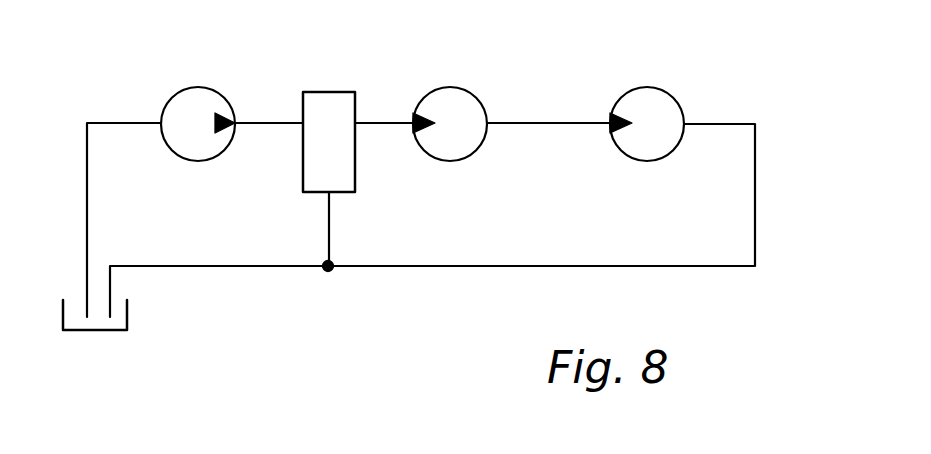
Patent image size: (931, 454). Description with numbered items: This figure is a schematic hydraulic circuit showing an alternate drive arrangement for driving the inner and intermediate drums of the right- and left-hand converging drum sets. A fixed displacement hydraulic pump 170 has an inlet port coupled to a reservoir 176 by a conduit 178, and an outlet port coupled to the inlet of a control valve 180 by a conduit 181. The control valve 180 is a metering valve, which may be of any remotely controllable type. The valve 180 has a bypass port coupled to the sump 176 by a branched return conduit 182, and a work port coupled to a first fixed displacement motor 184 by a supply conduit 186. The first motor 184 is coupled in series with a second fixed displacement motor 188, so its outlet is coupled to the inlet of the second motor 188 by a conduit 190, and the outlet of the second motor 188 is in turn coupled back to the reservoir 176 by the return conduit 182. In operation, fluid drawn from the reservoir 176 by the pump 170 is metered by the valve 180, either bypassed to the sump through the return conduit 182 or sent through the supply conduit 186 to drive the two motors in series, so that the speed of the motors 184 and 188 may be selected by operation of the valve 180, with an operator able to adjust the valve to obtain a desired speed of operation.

The fixed displacement hydraulic pump 170 is at (177, 90).
The reservoir 176 is at (113, 332).
The conduit 178 is at (85, 138).
The control valve 180 is at (330, 90).
The conduit 181 is at (267, 122).
The branched return conduit 182 is at (493, 268).
The first fixed displacement motor 184 is at (467, 90).
The supply conduit 186 is at (383, 123).
The second fixed displacement motor 188 is at (665, 91).
The conduit 190 is at (560, 124).